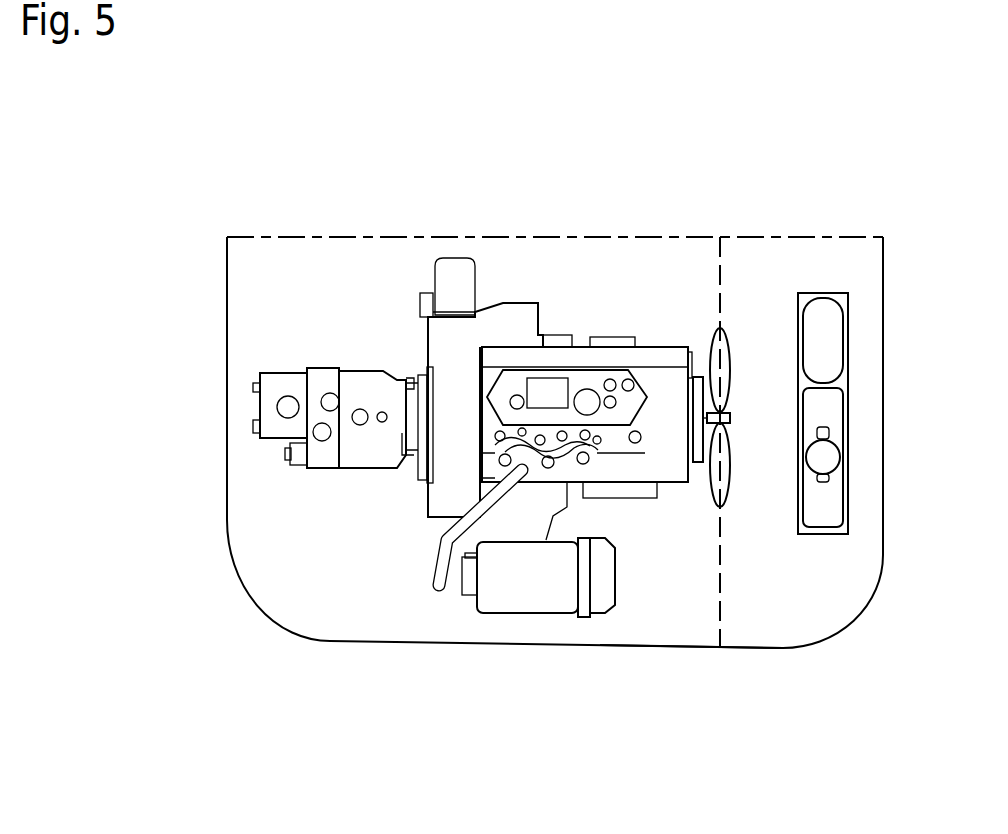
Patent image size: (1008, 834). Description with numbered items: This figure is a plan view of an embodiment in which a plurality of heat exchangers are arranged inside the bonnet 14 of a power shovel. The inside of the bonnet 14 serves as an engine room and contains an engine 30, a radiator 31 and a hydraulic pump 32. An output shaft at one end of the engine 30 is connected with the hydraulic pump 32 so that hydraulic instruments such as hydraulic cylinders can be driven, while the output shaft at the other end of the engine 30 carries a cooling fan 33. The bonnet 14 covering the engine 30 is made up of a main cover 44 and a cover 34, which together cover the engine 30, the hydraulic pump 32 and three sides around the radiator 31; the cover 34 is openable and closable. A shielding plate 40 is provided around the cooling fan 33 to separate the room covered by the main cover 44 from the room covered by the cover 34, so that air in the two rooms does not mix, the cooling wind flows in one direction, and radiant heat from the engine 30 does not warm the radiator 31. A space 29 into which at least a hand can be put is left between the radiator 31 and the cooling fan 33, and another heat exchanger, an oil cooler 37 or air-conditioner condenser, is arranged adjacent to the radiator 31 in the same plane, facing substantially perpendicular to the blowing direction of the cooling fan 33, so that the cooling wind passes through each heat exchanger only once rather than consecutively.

The bonnet 14 is at (418, 645).
The space 29 is at (759, 373).
The engine 30 is at (525, 293).
The radiator 31 is at (823, 517).
The hydraulic pump 32 is at (370, 372).
The cooling fan 33 is at (717, 505).
The cover 34 is at (767, 650).
The oil cooler 37 is at (829, 316).
The shielding plate 40 is at (716, 310).
The main cover 44 is at (620, 647).